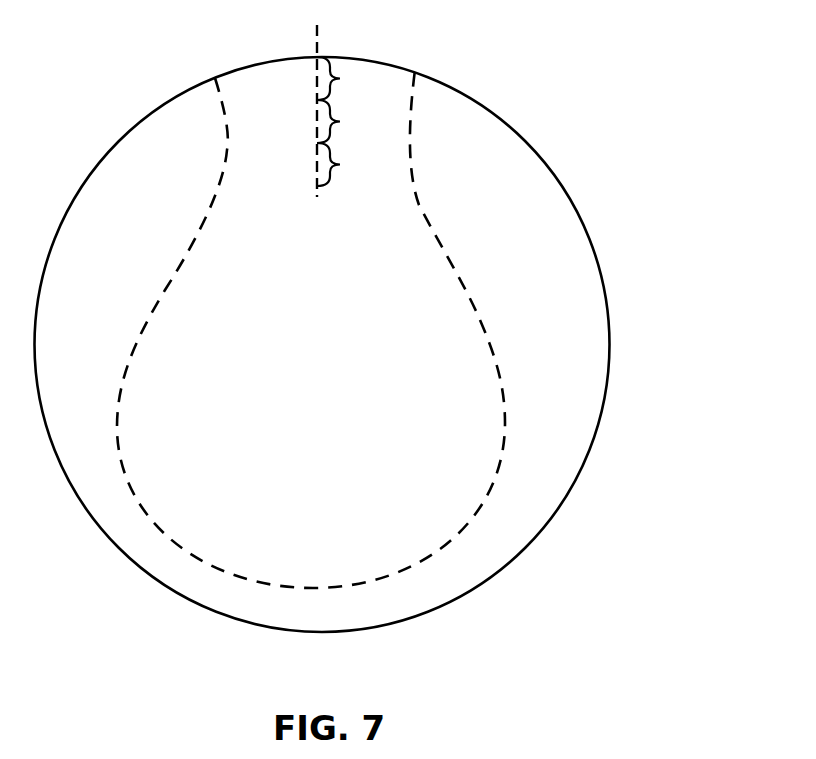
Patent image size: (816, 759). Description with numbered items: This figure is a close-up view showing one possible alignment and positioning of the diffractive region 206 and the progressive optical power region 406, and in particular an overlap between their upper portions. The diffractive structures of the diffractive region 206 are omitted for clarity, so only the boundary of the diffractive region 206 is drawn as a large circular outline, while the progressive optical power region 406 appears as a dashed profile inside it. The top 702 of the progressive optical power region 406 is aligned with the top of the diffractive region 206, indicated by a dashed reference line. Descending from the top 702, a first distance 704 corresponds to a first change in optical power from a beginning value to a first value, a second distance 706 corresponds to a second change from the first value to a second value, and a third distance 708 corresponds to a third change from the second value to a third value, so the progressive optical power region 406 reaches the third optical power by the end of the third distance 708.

The diffractive region 206 is at (587, 213).
The progressive optical power region 406 is at (426, 200).
The top 702 is at (317, 57).
The first distance 704 is at (358, 78).
The second distance 706 is at (358, 121).
The third distance 708 is at (358, 164).